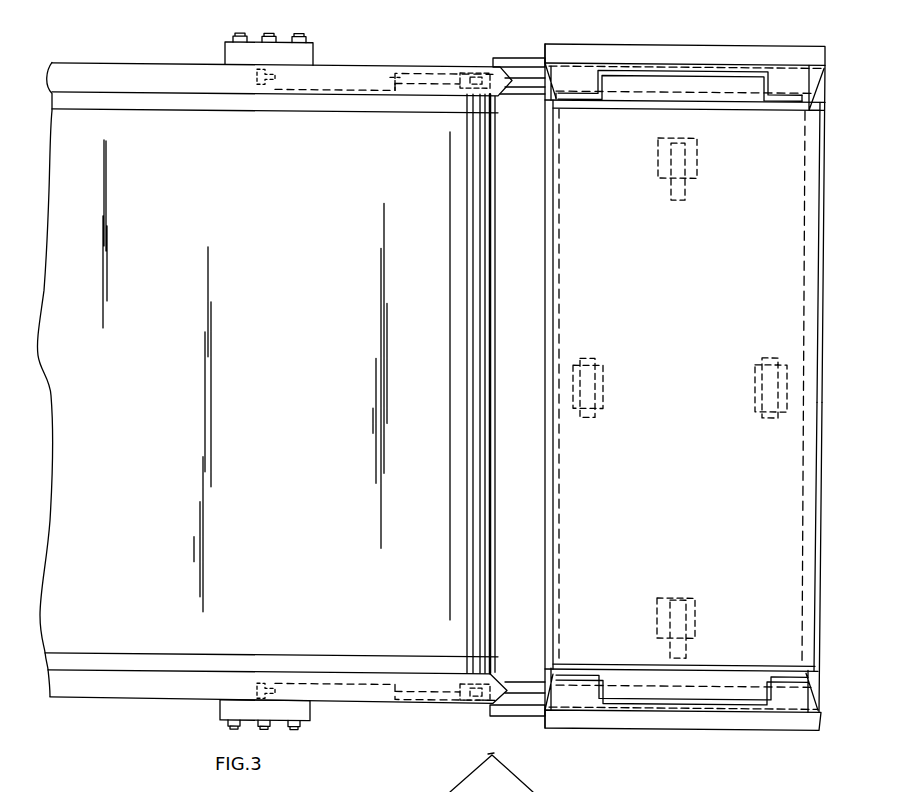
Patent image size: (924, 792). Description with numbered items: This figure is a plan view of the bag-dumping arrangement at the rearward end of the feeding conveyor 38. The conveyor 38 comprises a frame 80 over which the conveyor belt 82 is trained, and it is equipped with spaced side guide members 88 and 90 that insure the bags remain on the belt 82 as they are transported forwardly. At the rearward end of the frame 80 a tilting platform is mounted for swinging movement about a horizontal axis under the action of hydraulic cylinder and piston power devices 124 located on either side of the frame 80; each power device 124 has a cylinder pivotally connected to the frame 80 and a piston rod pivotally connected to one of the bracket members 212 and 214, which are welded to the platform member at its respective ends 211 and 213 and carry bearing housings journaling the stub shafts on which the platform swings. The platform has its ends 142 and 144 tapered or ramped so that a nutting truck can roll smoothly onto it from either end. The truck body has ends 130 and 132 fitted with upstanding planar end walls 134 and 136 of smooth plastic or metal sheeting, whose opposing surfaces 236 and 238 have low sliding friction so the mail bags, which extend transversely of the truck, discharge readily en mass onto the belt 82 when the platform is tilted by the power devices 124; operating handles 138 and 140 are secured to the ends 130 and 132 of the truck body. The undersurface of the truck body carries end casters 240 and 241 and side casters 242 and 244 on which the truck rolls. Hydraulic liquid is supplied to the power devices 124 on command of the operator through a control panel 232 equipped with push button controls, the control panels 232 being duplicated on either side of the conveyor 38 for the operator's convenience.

The feeding conveyor 38 is at (438, 60).
The frame 80 is at (355, 60).
The conveyor belt 82 is at (167, 123).
The side guide member 88 is at (185, 690).
The side guide member 90 is at (207, 73).
The hydraulic cylinder and piston power device 124 is at (375, 83).
The end of truck body 130 is at (786, 648).
The end of truck body 132 is at (786, 156).
The end wall 134 is at (713, 662).
The end wall 136 is at (737, 110).
The operating handle 138 is at (737, 704).
The operating handle 140 is at (698, 78).
The end of platform 142 is at (818, 720).
The end of platform 144 is at (790, 50).
The end of platform member 211 is at (817, 698).
The bracket member 212 is at (500, 716).
The end of platform member 213 is at (826, 96).
The bracket member 214 is at (526, 58).
The control panel 232 is at (283, 52).
The opposing surface of end wall 236 is at (620, 662).
The opposing surface of end wall 238 is at (613, 111).
The end caster 240 is at (700, 598).
The end caster 241 is at (692, 194).
The side caster 242 is at (606, 370).
The side caster 244 is at (773, 350).